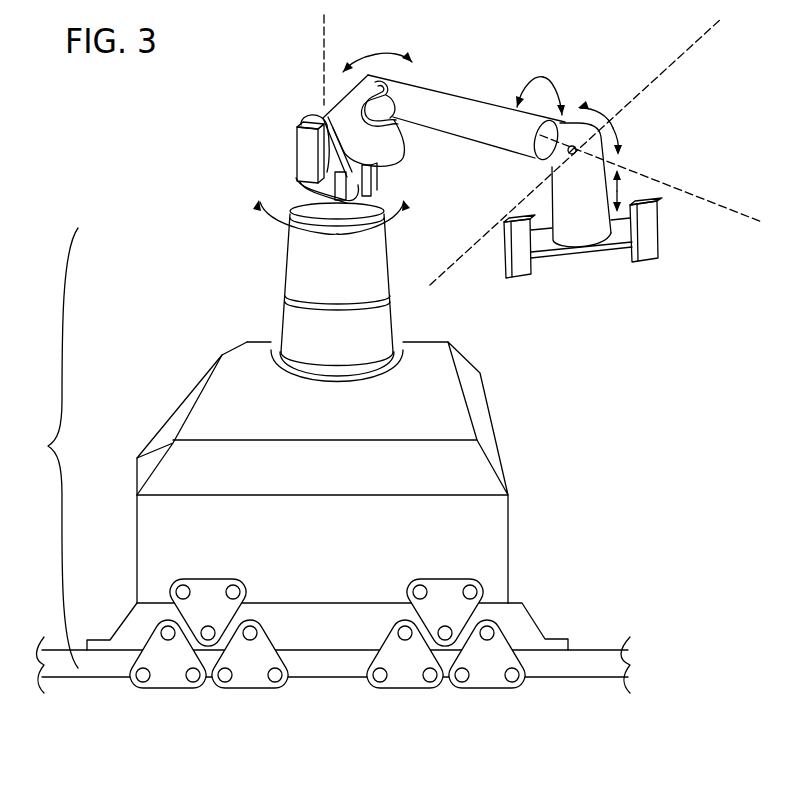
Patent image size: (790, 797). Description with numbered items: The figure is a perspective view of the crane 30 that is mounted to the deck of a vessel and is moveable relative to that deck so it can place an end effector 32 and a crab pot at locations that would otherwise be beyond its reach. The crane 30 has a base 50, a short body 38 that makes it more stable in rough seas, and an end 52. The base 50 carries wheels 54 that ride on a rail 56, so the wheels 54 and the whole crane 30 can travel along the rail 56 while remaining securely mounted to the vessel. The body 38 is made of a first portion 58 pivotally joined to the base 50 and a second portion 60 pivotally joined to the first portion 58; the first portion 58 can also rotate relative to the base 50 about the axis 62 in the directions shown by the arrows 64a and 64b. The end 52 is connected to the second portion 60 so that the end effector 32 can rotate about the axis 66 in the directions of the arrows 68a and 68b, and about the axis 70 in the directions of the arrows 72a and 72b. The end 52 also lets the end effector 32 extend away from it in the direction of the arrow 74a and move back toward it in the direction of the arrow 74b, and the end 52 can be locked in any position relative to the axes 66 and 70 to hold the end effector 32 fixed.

The crane 30 is at (243, 170).
The end effector 32 is at (592, 252).
The body 38 is at (431, 78).
The base 50 is at (300, 435).
The end 52 is at (582, 235).
The wheels 54 is at (167, 688).
The rail 56 is at (578, 678).
The first portion 58 is at (328, 117).
The second portion 60 is at (458, 120).
The axis 62 is at (322, 37).
The arrow 64a is at (258, 203).
The arrow 64b is at (410, 200).
The axis 66 is at (733, 213).
The arrow 68a is at (517, 105).
The arrow 68b is at (562, 112).
The axis 70 is at (690, 47).
The arrow 72a is at (582, 108).
The arrow 72b is at (620, 150).
The arrow 74a is at (619, 205).
The arrow 74b is at (618, 172).